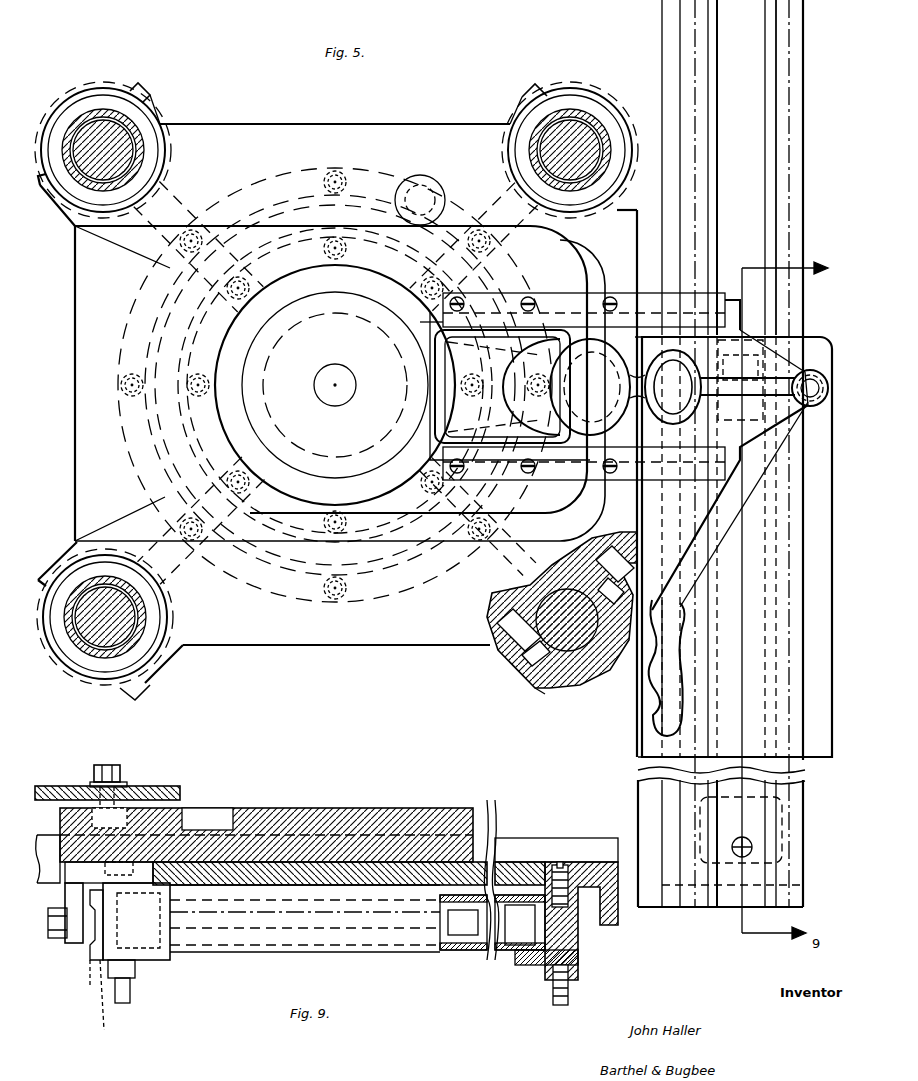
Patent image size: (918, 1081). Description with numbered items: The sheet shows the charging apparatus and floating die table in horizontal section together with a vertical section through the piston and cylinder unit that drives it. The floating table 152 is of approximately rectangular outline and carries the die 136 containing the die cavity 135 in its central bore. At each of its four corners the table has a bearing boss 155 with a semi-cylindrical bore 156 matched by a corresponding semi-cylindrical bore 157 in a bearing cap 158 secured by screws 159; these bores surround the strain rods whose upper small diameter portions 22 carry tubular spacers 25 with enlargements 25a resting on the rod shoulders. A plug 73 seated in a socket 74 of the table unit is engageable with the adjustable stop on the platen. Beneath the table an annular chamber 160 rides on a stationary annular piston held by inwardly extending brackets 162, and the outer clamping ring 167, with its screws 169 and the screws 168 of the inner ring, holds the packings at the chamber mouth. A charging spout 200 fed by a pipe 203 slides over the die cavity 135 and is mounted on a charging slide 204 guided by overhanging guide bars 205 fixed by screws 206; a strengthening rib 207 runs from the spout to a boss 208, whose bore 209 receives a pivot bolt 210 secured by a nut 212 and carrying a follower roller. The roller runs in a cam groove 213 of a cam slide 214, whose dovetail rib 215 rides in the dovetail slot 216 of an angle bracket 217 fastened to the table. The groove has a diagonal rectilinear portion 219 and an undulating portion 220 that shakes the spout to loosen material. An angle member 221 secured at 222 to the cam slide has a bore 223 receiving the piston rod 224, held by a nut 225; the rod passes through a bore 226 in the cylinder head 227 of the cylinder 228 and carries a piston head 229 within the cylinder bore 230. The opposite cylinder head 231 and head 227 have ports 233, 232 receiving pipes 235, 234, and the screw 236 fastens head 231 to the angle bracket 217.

In FIG. 5, the small diameter portion 22 is at (112, 125).
In FIG. 5, the tubular spacer 25 is at (72, 95).
In FIG. 5, the enlargement 25a is at (148, 88).
In FIG. 5, the plug 73 is at (425, 183).
In FIG. 5, the socket 74 is at (410, 183).
In FIG. 5, the die cavity 135 is at (348, 370).
In FIG. 5, the die 136 is at (335, 385).
In FIG. 5, the floating table 152 is at (278, 124).
In FIG. 5, the bearing boss 155 is at (172, 110).
In FIG. 5, the semi-cylindrical bore 156 is at (190, 152).
In FIG. 5, the semi-cylindrical bore 157 is at (78, 80).
In FIG. 5, the bearing cap 158 is at (98, 92).
In FIG. 5, the screw 159 is at (548, 690).
In FIG. 5, the annular chamber 160 is at (135, 344).
In FIG. 5, the bracket 162 is at (210, 168).
In FIG. 5, the outer clamping ring 167 is at (120, 438).
In FIG. 5, the screw 168 is at (199, 372).
In FIG. 5, the screw 169 is at (120, 388).
In FIG. 5, the charging spout 200 is at (552, 330).
In FIG. 5, the pipe 203 is at (574, 387).
In FIG. 5, the charging slide 204 is at (432, 322).
In FIG. 9, the charging slide 204 is at (150, 786).
In FIG. 5, the guide bar 205 is at (618, 293).
In FIG. 5, the screw 206 is at (608, 296).
In FIG. 5, the strengthening rib 207 is at (720, 382).
In FIG. 5, the boss 208 is at (810, 375).
In FIG. 5, the bore 209 is at (810, 335).
In FIG. 5, the pivot bolt 210 is at (814, 408).
In FIG. 5, the nut 212 is at (804, 425).
In FIG. 9, the nut 212 is at (122, 772).
In FIG. 5, the cam groove 213 is at (750, 506).
In FIG. 9, the cam groove 213 is at (228, 806).
In FIG. 5, the cam slide 214 is at (818, 337).
In FIG. 9, the cam slide 214 is at (398, 808).
In FIG. 9, the dovetail rib 215 is at (483, 850).
In FIG. 5, the dovetail slot 216 is at (792, 84).
In FIG. 9, the dovetail slot 216 is at (556, 842).
In FIG. 5, the angle bracket 217 is at (792, 130).
In FIG. 9, the angle bracket 217 is at (520, 873).
In FIG. 5, the diagonal rectilinear portion 219 is at (727, 536).
In FIG. 5, the undulating portion 220 is at (685, 636).
In FIG. 5, the angle member 221 is at (740, 362).
In FIG. 9, the angle member 221 is at (70, 895).
In FIG. 9, the securing means 222 is at (109, 871).
In FIG. 9, the bore 223 is at (88, 950).
In FIG. 9, the piston rod 224 is at (95, 972).
In FIG. 5, the nut 225 is at (753, 297).
In FIG. 9, the nut 225 is at (58, 940).
In FIG. 9, the bore 226 is at (108, 1004).
In FIG. 5, the cylinder head 227 is at (756, 452).
In FIG. 9, the cylinder head 227 is at (165, 960).
In FIG. 5, the cylinder 228 is at (770, 572).
In FIG. 9, the cylinder 228 is at (270, 954).
In FIG. 9, the piston head 229 is at (520, 922).
In FIG. 9, the cylinder bore 230 is at (455, 955).
In FIG. 5, the cylinder head 231 is at (732, 873).
In FIG. 9, the cylinder head 231 is at (580, 928).
In FIG. 9, the port 232 is at (138, 972).
In FIG. 9, the port 233 is at (580, 958).
In FIG. 9, the pipe 234 is at (130, 998).
In FIG. 9, the pipe 235 is at (553, 1000).
In FIG. 5, the screw 236 is at (738, 838).
In FIG. 9, the screw 236 is at (578, 856).